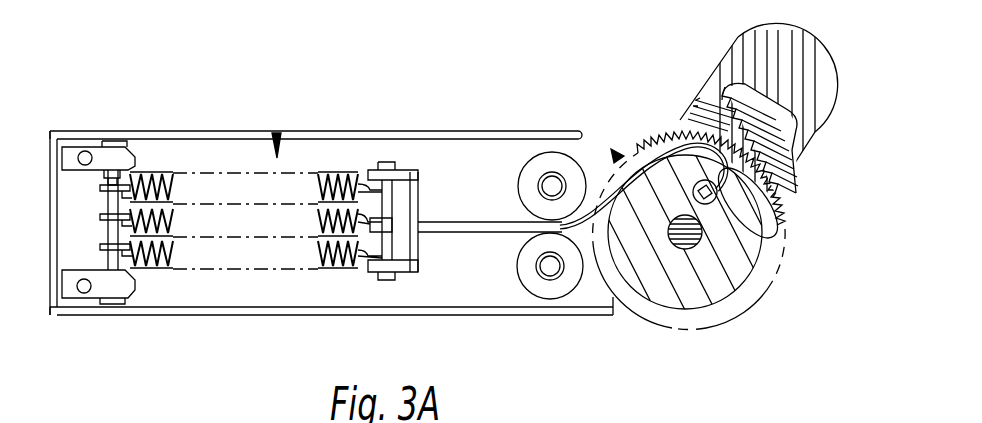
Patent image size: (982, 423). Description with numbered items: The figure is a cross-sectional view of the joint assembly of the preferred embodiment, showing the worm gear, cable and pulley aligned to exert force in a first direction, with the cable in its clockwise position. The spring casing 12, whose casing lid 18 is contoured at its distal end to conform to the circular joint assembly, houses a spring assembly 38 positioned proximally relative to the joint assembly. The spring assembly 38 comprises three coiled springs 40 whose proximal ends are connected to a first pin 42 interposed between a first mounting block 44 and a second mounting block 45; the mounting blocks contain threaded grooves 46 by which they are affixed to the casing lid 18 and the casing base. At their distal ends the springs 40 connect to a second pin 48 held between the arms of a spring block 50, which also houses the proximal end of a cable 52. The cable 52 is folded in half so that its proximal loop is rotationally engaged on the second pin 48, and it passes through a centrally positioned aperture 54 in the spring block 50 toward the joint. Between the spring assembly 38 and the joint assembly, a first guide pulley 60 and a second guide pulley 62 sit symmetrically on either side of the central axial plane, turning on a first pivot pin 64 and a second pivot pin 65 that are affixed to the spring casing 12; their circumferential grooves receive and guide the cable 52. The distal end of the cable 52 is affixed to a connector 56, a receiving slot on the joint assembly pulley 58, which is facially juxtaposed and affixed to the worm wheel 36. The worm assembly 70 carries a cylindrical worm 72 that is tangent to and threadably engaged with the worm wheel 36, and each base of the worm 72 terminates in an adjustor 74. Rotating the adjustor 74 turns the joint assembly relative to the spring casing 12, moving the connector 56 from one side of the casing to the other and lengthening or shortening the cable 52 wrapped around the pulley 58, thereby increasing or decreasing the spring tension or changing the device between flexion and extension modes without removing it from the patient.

The spring casing 12 is at (50, 221).
The casing lid 18 is at (212, 131).
The worm wheel 36 is at (645, 150).
The spring assembly 38 is at (277, 133).
The coiled springs 40 is at (165, 266).
The first pin 42 is at (100, 198).
The first mounting block 44 is at (112, 158).
The second mounting block 45 is at (112, 290).
The threaded grooves 46 is at (84, 293).
The second pin 48 is at (412, 185).
The spring block 50 is at (405, 273).
The cable 52 is at (618, 156).
The centrally positioned aperture 54 is at (422, 236).
The connector 56 is at (714, 202).
The joint assembly pulley 58 is at (655, 175).
The first guide pulley 60 is at (535, 166).
The second guide pulley 62 is at (535, 287).
The first pivot pin 64 is at (552, 180).
The second pivot pin 65 is at (551, 282).
The worm assembly 70 is at (804, 36).
The worm 72 is at (777, 117).
The adjustor 74 is at (662, 122).